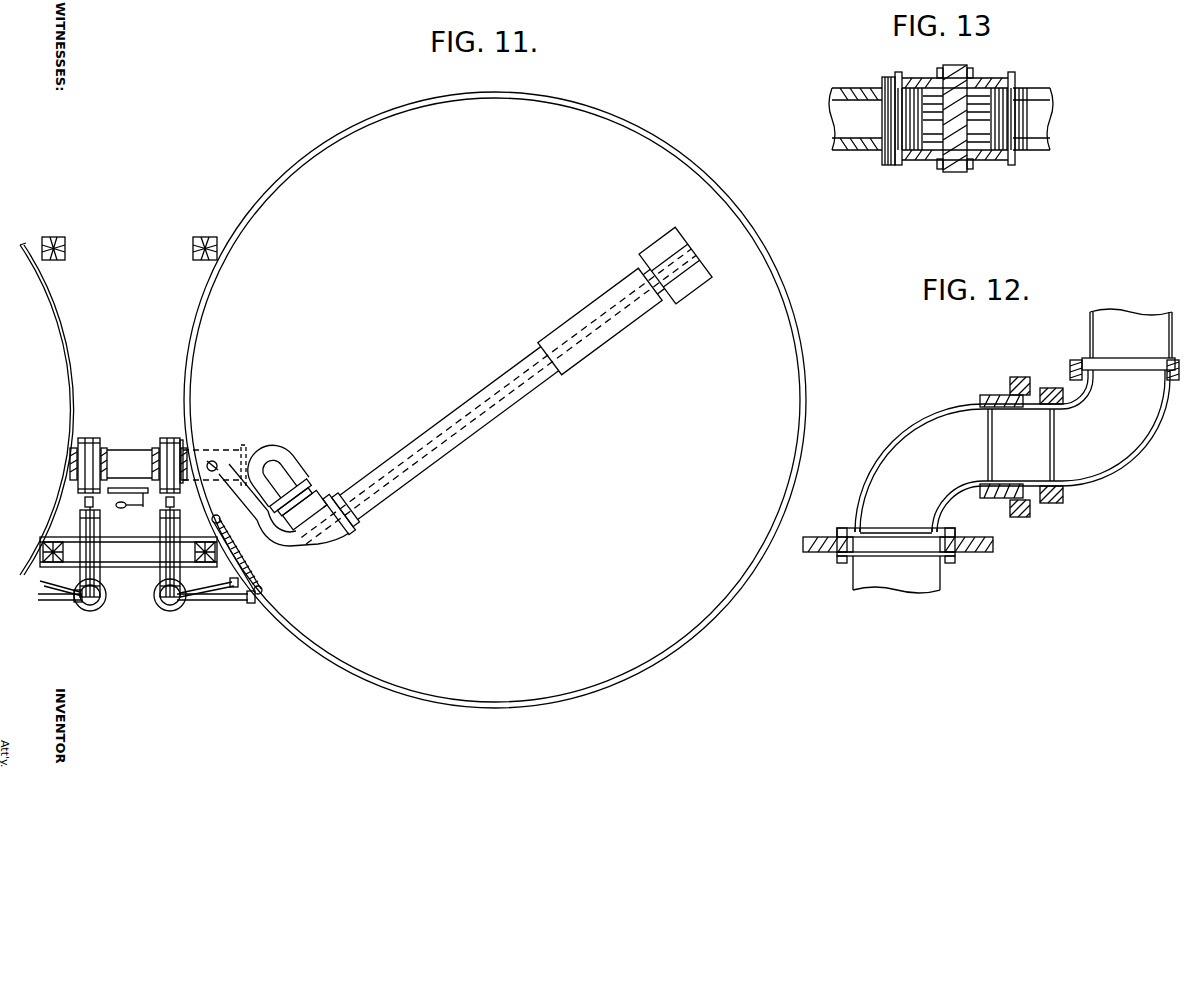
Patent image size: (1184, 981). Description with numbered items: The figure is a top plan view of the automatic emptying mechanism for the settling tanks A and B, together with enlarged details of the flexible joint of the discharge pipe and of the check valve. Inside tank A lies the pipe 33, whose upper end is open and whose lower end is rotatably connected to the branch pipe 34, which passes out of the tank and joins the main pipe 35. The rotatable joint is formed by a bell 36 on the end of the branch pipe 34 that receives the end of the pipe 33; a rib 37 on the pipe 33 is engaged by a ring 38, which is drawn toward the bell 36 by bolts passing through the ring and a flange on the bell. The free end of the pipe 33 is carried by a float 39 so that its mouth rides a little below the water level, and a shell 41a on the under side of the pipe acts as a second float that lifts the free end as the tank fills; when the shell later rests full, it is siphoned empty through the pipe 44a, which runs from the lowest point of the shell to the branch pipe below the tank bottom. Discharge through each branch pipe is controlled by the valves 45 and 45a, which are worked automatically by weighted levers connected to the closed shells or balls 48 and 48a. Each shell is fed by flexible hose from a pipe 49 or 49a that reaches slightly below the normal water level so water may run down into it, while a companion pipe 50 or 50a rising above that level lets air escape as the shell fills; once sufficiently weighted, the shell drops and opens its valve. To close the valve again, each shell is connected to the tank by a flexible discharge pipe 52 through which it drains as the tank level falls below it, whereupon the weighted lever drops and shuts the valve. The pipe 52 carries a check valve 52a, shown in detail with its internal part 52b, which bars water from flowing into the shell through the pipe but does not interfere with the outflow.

In FIG. 11, the tank A is at (495, 400).
In FIG. 11, the tank B is at (39, 409).
In FIG. 11, the pipe 33 is at (512, 405).
In FIG. 12, the pipe 33 is at (1090, 333).
In FIG. 11, the branch pipe 34 is at (284, 475).
In FIG. 12, the branch pipe 34 is at (903, 428).
In FIG. 11, the main pipe 35 is at (123, 508).
In FIG. 12, the bell 36 is at (997, 389).
In FIG. 12, the rib 37 is at (1015, 409).
In FIG. 12, the ring 38 is at (1037, 376).
In FIG. 11, the float 39 is at (697, 288).
In FIG. 11, the shell 41a is at (612, 343).
In FIG. 11, the pipe 44a is at (297, 540).
In FIG. 11, the valve 45 is at (90, 443).
In FIG. 11, the valve 45a is at (168, 440).
In FIG. 11, the closed shell or ball 48 is at (98, 609).
In FIG. 11, the closed shell or ball 48a is at (160, 608).
In FIG. 11, the pipe 49 is at (62, 603).
In FIG. 11, the pipe 49a is at (211, 601).
In FIG. 11, the pipe 50 is at (84, 606).
In FIG. 11, the pipe 50a is at (245, 603).
In FIG. 11, the flexible discharge-pipe 52 is at (70, 590).
In FIG. 11, the check-valve 52a is at (212, 594).
In FIG. 13, the check-valve 52a is at (835, 118).
In FIG. 13, the hose union 52b is at (967, 137).